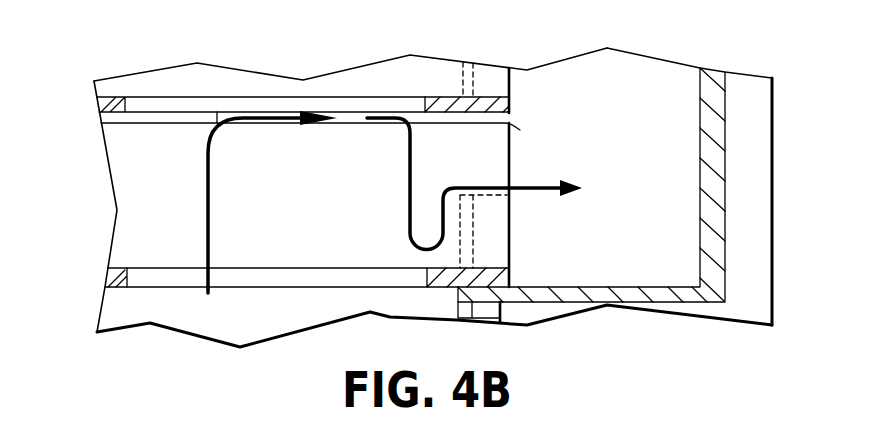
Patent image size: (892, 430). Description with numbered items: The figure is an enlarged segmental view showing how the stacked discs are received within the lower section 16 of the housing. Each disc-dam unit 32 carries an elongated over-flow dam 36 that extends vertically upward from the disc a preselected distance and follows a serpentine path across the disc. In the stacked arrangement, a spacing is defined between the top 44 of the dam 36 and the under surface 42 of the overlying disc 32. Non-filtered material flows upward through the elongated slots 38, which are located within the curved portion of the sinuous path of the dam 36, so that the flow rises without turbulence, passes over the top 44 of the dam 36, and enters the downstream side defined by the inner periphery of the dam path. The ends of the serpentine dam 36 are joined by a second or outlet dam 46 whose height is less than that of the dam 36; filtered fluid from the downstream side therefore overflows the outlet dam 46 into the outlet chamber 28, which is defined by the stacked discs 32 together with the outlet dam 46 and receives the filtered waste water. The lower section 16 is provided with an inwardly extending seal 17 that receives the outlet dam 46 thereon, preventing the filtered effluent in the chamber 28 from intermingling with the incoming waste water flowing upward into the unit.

The lower section 16 is at (727, 167).
The inwardly extending seal 17 is at (500, 322).
The outlet chamber 28 is at (642, 78).
The disc-dam unit 32 is at (128, 177).
The over-flow dam 36 is at (300, 210).
The elongated slots 38 is at (173, 122).
The under surface 42 is at (509, 113).
The top of the dam 44 is at (352, 123).
The outlet dam 46 is at (473, 233).